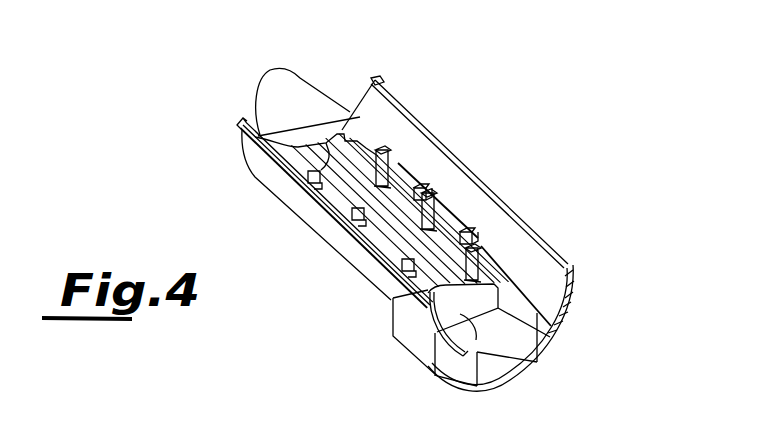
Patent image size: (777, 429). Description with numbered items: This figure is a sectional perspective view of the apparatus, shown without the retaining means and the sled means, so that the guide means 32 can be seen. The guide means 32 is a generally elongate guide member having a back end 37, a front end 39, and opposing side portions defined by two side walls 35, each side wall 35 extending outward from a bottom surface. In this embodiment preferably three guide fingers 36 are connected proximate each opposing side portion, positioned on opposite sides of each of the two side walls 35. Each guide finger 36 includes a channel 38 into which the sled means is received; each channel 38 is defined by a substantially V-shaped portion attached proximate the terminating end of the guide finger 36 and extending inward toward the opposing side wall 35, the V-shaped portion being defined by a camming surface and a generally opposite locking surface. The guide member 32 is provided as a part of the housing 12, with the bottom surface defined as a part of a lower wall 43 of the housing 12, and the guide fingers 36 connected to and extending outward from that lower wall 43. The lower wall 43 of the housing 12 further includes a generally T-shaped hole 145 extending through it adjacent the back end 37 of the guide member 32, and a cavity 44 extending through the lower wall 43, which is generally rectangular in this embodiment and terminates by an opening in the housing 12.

The housing 12 is at (567, 260).
The guide means 32 is at (430, 338).
The side walls 35 is at (460, 230).
The guide fingers 36 is at (402, 268).
The back end 37 is at (330, 148).
The channel 38 is at (482, 240).
The front end 39 is at (448, 363).
The lower wall 43 is at (317, 128).
The cavity 44 is at (503, 327).
The T-shaped hole 145 is at (240, 126).